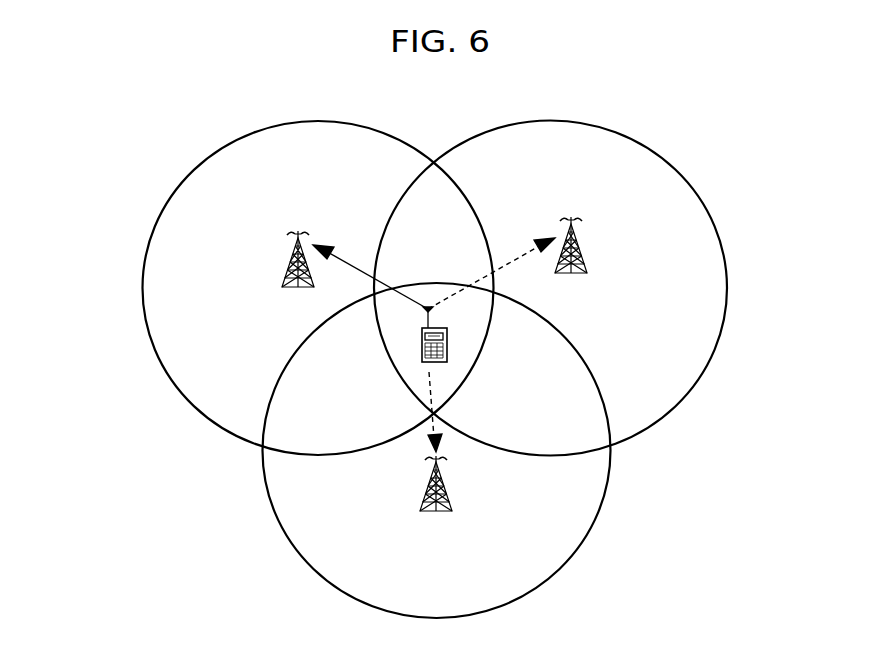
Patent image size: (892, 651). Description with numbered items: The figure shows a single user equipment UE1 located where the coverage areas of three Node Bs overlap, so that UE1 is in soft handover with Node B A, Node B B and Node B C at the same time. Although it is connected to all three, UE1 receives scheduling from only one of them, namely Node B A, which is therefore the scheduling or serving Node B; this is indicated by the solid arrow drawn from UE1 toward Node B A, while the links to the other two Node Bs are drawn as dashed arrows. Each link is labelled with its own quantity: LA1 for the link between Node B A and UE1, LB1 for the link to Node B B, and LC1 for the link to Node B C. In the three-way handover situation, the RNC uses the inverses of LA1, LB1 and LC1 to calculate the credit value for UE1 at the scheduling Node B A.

The UE UE1 is at (450, 334).
The Node B A is at (285, 235).
The Node B B is at (584, 228).
The Node B C is at (455, 509).
The path loss L A,1 LA1 is at (370, 271).
The path loss L B,1 LB1 is at (491, 263).
The path loss L C,1 LC1 is at (462, 419).